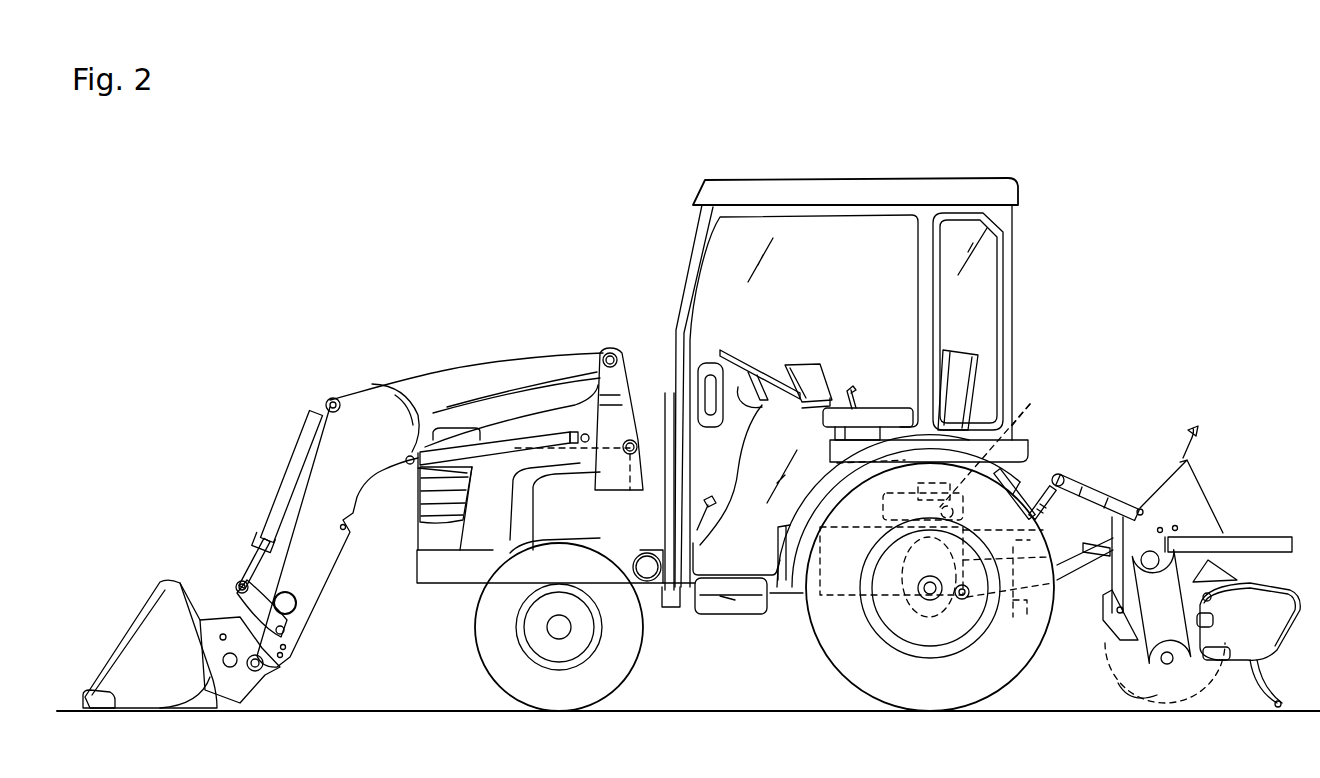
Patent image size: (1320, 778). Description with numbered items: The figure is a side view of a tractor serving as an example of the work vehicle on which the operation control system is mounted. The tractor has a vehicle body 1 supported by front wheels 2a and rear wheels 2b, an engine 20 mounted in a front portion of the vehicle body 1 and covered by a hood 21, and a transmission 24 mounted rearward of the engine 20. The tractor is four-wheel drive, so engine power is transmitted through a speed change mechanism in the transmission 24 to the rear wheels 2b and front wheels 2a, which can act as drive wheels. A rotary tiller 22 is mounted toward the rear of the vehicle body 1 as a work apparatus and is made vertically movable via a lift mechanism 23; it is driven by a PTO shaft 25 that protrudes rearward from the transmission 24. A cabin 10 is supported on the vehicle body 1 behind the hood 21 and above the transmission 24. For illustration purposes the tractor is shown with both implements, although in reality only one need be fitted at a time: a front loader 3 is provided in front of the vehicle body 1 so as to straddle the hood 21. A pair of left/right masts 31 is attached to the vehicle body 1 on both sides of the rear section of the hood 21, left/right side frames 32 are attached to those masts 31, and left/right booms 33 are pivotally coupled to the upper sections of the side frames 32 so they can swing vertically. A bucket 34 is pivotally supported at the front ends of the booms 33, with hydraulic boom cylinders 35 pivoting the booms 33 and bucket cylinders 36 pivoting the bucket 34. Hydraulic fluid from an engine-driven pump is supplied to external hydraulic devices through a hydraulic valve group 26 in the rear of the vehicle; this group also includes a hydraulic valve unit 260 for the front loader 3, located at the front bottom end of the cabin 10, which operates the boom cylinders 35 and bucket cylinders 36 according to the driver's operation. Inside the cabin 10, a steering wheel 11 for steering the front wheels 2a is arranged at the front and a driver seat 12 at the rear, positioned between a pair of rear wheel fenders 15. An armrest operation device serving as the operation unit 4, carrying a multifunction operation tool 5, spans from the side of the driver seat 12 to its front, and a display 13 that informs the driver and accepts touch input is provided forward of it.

The vehicle body 1 is at (426, 597).
The front wheels 2a is at (556, 697).
The rear wheels 2b is at (943, 697).
The front loader 3 is at (287, 344).
The operation unit 4 is at (887, 402).
The multifunction operation tool 5 is at (834, 400).
The cabin 10 is at (695, 243).
The steering wheel 11 is at (756, 367).
The driver seat 12 is at (977, 352).
The display 13 is at (808, 377).
The rear wheel fenders 15 is at (1032, 443).
The engine 20 is at (533, 543).
The hood 21 is at (565, 405).
The rotary tiller 22 is at (1250, 460).
The lift mechanism 23 is at (1108, 469).
The transmission 24 is at (740, 600).
The PTO shaft 25 is at (1023, 547).
The hydraulic valve group 26 is at (1030, 404).
The masts 31 is at (641, 582).
The side frames 32 is at (625, 380).
The booms 33 is at (440, 378).
The bucket 34 is at (138, 633).
The boom cylinders 35 is at (393, 413).
The bucket cylinders 36 is at (293, 480).
The hydraulic valve unit 260 is at (718, 600).